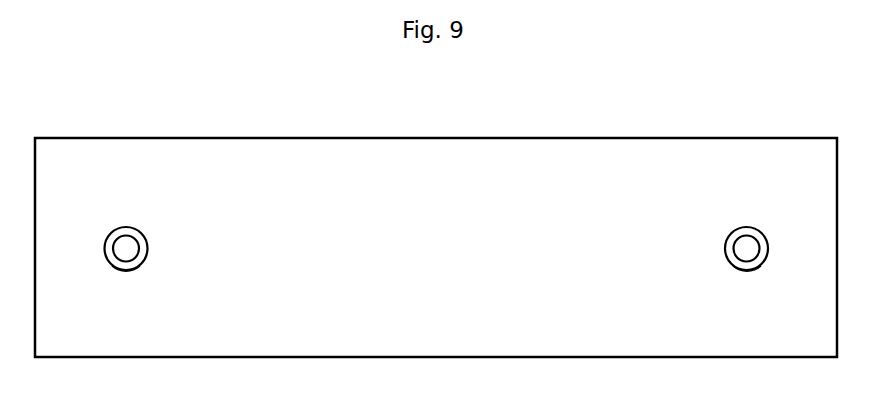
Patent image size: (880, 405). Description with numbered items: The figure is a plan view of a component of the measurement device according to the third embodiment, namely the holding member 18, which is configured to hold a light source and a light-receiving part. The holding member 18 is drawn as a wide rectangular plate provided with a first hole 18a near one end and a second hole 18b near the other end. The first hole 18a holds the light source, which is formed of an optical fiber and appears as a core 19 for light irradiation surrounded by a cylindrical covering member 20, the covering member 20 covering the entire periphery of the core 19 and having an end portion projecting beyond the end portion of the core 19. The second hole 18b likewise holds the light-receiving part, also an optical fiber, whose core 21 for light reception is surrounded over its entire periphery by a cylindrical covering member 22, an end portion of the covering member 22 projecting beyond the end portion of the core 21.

The holding member 18 is at (478, 138).
The first hole 18a is at (123, 268).
The second hole 18b is at (753, 268).
The core 19 is at (128, 240).
The covering member 20 is at (142, 250).
The core 21 is at (745, 240).
The covering member 22 is at (729, 250).